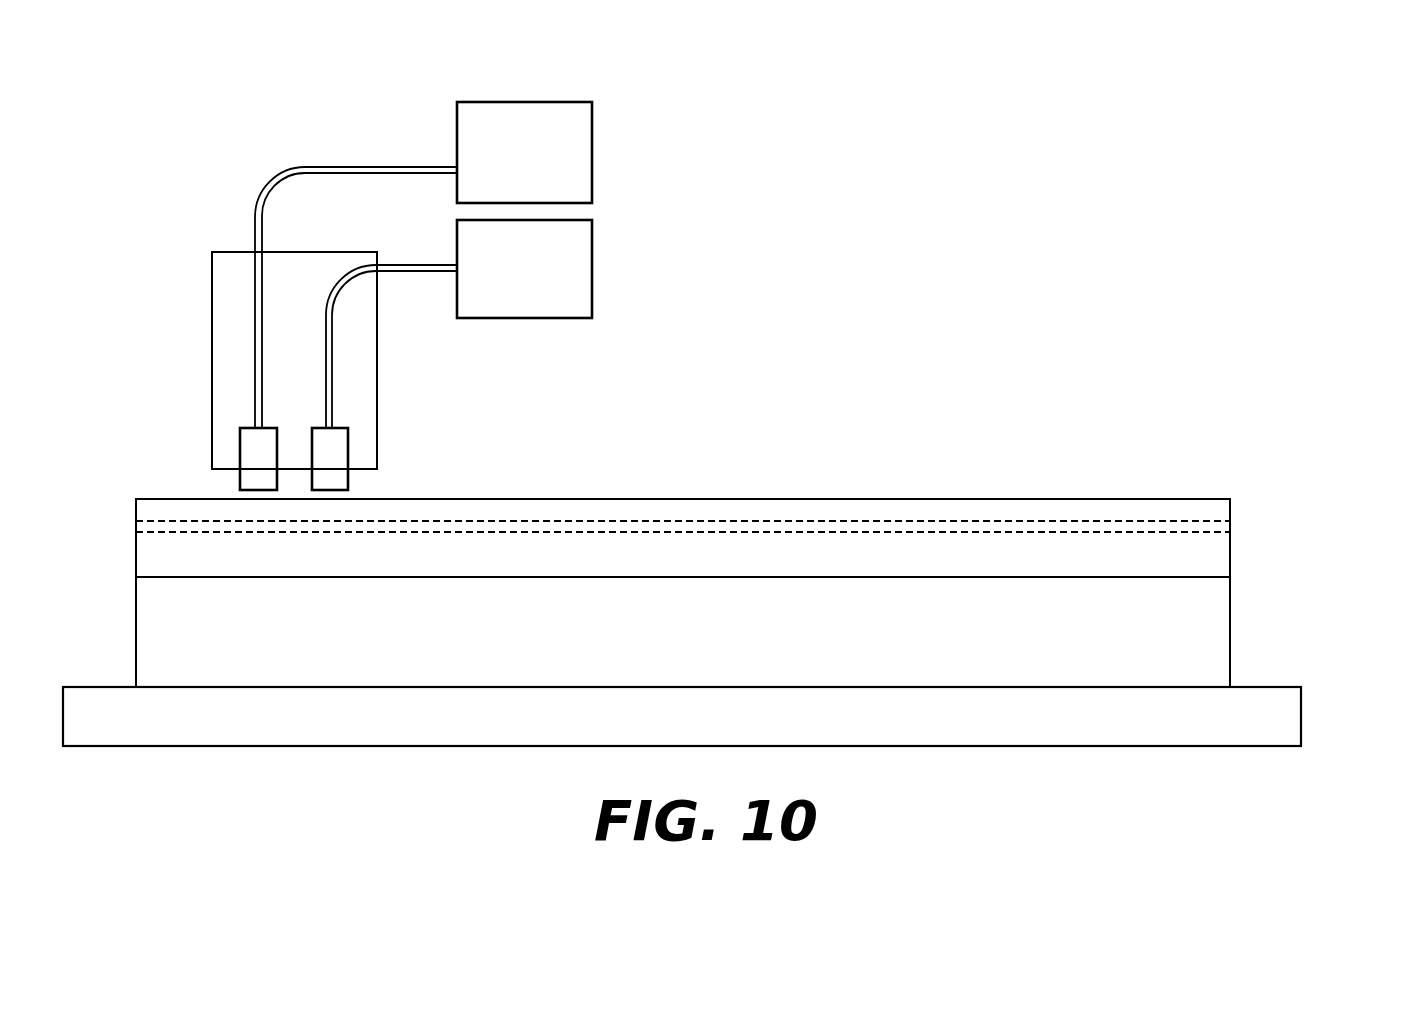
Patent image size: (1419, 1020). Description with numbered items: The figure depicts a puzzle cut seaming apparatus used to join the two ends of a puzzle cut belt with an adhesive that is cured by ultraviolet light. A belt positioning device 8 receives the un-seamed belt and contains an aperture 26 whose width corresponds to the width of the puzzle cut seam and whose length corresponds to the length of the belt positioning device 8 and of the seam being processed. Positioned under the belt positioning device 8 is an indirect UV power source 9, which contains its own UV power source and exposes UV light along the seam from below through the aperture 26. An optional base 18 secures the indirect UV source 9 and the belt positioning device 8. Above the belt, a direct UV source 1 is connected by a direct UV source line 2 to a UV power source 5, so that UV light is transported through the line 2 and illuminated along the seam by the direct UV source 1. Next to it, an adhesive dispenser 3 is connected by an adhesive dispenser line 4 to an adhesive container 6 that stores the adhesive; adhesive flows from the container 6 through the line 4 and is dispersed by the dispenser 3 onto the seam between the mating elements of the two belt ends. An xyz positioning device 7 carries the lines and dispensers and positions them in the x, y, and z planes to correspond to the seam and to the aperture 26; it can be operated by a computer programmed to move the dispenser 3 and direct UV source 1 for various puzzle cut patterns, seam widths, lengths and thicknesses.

The direct UV source 1 is at (238, 485).
The direct UV source line 2 is at (399, 161).
The adhesive dispenser 3 is at (351, 485).
The adhesive dispenser line 4 is at (398, 274).
The UV power source 5 is at (597, 129).
The adhesive container 6 is at (597, 259).
The xyz positioning device 7 is at (209, 332).
The belt positioning device 8 is at (1240, 538).
The indirect UV power source 9 is at (1240, 630).
The base 18 is at (1305, 705).
The aperture 26 is at (891, 520).